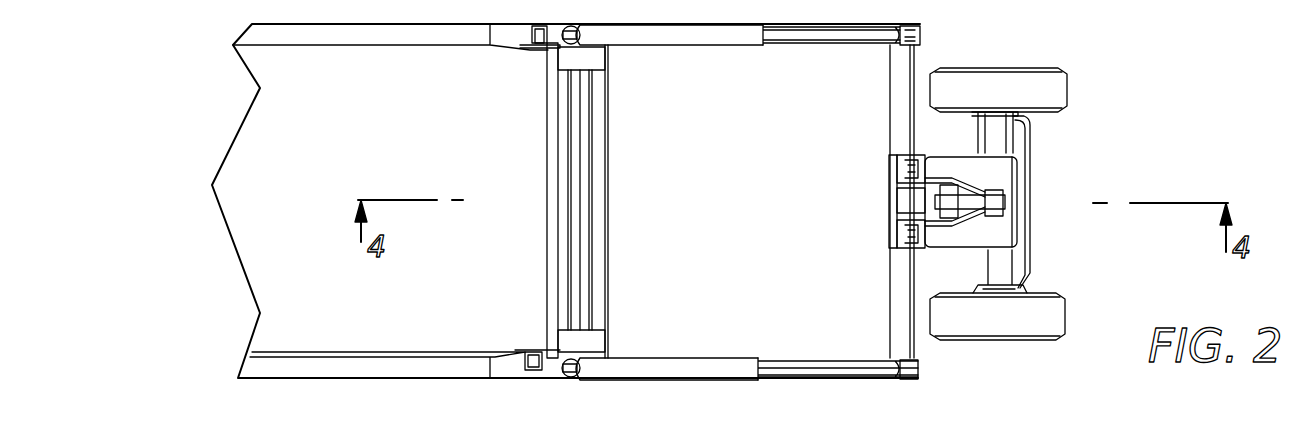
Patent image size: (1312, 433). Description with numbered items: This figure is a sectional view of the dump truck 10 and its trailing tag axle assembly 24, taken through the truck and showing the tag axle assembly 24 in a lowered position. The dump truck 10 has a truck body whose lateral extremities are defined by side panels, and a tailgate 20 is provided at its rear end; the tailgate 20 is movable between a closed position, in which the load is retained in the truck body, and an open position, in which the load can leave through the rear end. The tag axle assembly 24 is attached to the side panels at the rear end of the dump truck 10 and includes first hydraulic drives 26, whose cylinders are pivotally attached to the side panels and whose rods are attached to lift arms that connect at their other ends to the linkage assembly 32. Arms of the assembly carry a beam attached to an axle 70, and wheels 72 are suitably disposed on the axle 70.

The dump truck 10 is at (238, 116).
The tailgate 20 is at (580, 181).
The trailing tag axle assembly 24 is at (932, 49).
The first hydraulic drives 26 is at (679, 52).
The linkage assembly 32 is at (985, 180).
The axle 70 is at (998, 268).
The wheels 72 is at (1056, 90).